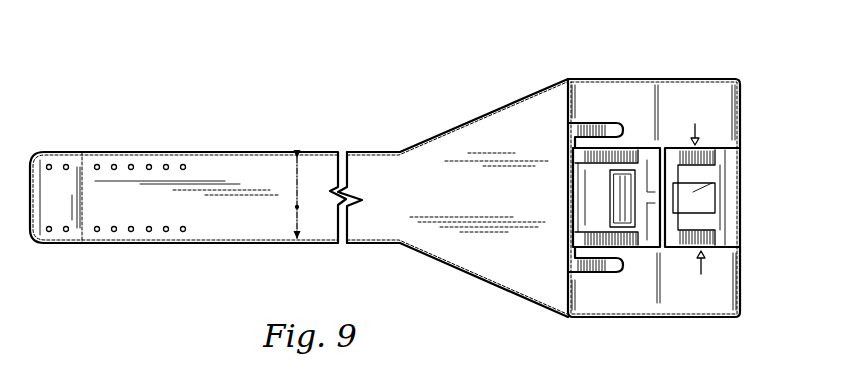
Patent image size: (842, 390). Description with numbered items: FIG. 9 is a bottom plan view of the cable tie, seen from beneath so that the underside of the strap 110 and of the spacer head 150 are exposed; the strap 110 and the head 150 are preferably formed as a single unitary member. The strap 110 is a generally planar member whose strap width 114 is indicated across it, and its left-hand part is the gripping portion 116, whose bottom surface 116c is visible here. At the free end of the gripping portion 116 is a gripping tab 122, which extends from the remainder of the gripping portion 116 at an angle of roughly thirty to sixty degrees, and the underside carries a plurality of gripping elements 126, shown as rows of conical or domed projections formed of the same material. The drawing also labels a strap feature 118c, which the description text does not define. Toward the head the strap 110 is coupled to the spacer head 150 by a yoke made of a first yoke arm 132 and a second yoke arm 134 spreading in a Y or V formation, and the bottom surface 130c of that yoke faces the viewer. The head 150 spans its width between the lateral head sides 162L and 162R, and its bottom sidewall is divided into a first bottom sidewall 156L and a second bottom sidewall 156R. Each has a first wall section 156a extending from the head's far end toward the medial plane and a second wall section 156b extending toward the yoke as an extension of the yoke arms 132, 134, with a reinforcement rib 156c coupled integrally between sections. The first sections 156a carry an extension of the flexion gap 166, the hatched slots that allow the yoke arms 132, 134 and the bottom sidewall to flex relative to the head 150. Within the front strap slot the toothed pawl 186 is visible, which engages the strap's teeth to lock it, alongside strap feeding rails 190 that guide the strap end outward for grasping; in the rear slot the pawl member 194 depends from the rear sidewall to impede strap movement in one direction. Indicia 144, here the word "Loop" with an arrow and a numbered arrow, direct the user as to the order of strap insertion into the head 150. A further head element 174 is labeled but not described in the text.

The strap 110 is at (228, 124).
The strap width 114 is at (297, 207).
The gripping portion 116 is at (102, 252).
The bottom surface of the gripping portion 116c is at (121, 208).
The strap portion 118c is at (315, 172).
The gripping tab 122 is at (62, 198).
The gripping elements 126 is at (183, 233).
The bottom surface of the yoke 130c is at (512, 262).
The first yoke arm 132 is at (430, 258).
The second yoke arm 134 is at (462, 120).
The indicia 144 is at (683, 105).
The spacer head 150 is at (760, 108).
The first wall section 156a is at (705, 128).
The second wall section 156b is at (593, 103).
The reinforcement rib 156c is at (680, 206).
The first bottom sidewall 156L is at (713, 265).
The second bottom sidewall 156R is at (705, 100).
The lateral head side 162L is at (700, 317).
The lateral head side 162R is at (648, 78).
The flexion gap 166 is at (592, 122).
The hatched pads 174 is at (695, 157).
The toothed pawl 186 is at (612, 193).
The strap feeding rails 190 is at (585, 158).
The pawl member 194 is at (700, 195).